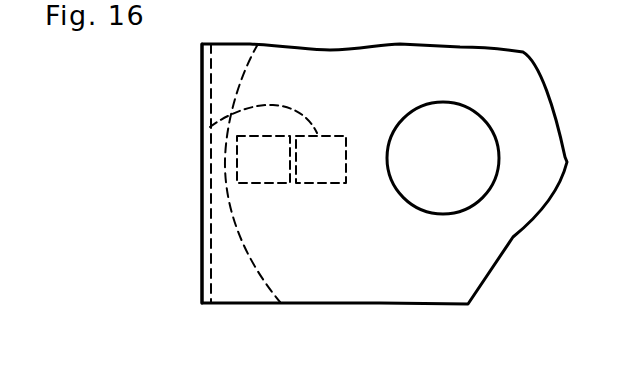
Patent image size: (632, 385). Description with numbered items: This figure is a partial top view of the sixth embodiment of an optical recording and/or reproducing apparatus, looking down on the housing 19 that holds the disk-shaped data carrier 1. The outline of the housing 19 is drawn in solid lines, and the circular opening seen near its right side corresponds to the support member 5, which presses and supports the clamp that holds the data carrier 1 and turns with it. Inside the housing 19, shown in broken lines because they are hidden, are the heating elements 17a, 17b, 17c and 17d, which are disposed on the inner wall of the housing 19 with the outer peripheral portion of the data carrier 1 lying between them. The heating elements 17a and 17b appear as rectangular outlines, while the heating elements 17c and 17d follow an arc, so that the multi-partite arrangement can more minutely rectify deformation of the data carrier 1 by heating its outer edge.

The data carrier 1 is at (257, 268).
The support member 5 is at (482, 112).
The housing 19 is at (199, 98).
The heating element 17a is at (273, 183).
The heating element 17b is at (109, 241).
The heating element 17c is at (210, 127).
The heating element 17d is at (27, 173).